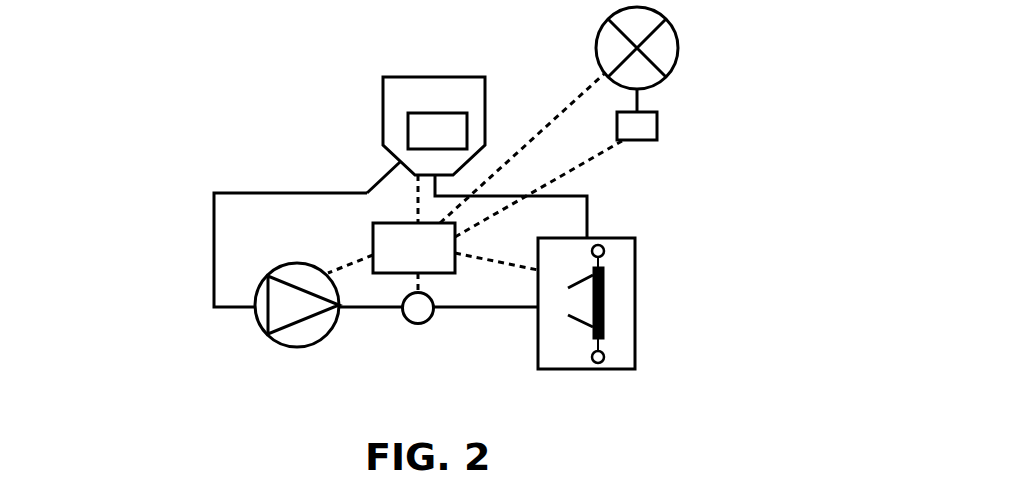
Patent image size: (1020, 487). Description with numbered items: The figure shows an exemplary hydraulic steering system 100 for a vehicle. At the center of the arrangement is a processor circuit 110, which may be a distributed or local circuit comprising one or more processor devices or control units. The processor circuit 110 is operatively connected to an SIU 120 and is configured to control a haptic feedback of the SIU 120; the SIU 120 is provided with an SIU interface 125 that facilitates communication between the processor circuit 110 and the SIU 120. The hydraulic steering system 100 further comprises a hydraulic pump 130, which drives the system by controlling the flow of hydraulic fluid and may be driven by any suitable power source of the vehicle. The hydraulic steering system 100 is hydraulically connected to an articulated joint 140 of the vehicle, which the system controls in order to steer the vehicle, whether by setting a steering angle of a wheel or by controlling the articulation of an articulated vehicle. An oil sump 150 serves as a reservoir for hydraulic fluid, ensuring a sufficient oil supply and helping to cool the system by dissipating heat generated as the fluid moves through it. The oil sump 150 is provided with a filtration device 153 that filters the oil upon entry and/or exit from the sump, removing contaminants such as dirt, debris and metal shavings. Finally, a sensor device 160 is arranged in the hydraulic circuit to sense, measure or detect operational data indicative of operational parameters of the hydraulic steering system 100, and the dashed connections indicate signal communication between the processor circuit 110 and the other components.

The hydraulic steering system 100 is at (196, 122).
The processor circuit 110 is at (475, 183).
The SIU 120 is at (671, 23).
The SIU interface 125 is at (658, 126).
The hydraulic pump 130 is at (258, 328).
The articulated joint 140 is at (618, 238).
The oil sump 150 is at (485, 100).
The filtration device 153 is at (437, 131).
The sensor device 160 is at (407, 322).